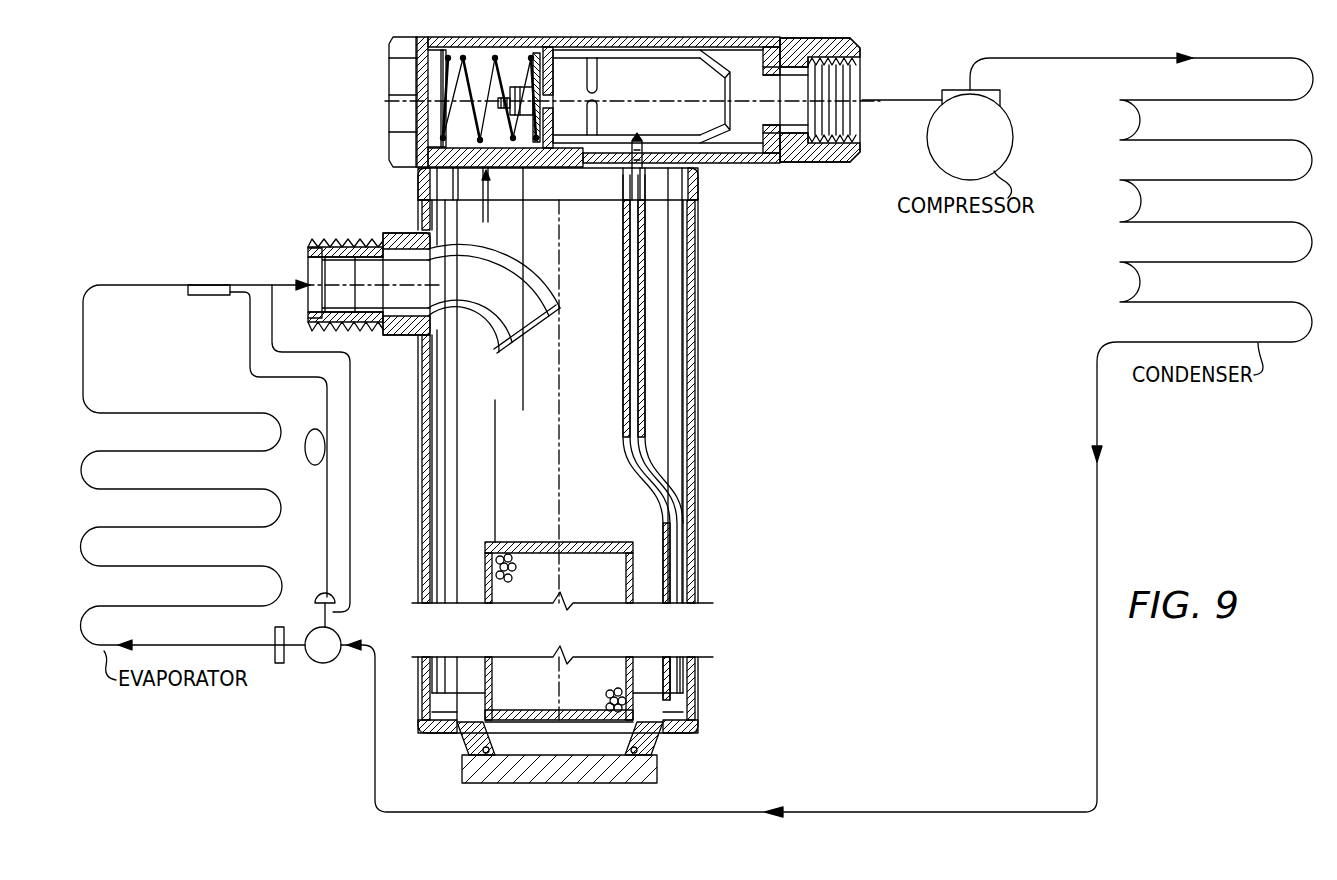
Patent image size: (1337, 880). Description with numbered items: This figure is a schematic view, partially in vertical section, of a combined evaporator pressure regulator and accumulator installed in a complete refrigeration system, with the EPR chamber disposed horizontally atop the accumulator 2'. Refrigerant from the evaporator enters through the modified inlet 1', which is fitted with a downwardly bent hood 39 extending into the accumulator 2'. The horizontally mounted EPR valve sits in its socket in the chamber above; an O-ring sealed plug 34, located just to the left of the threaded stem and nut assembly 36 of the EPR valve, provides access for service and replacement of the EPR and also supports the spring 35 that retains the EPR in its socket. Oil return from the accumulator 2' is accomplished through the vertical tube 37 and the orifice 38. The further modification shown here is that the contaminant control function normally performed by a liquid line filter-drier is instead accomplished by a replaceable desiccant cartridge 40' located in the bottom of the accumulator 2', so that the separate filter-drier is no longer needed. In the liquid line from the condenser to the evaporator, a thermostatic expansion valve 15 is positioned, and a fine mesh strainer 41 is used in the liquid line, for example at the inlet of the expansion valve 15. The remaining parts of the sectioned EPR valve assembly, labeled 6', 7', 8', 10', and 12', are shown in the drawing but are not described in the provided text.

The modified inlet 1' is at (370, 268).
The accumulator 2' is at (547, 475).
The valve body 6' is at (618, 87).
The outlet fitting nut 7' is at (820, 84).
The valve seat 8' is at (595, 77).
The sleeve 10' is at (641, 75).
The slot 12' is at (624, 96).
The thermostatic expansion valve 15 is at (310, 657).
The O-ring sealed plug 34 is at (433, 47).
The spring 35 is at (508, 40).
The threaded stem and nut assembly 36 is at (538, 53).
The vertical tube 37 is at (648, 381).
The orifice 38 is at (640, 132).
The downwardly bent hood 39 is at (540, 283).
The replaceable desiccant cartridge 40' is at (563, 631).
The fine mesh strainer 41 is at (280, 626).